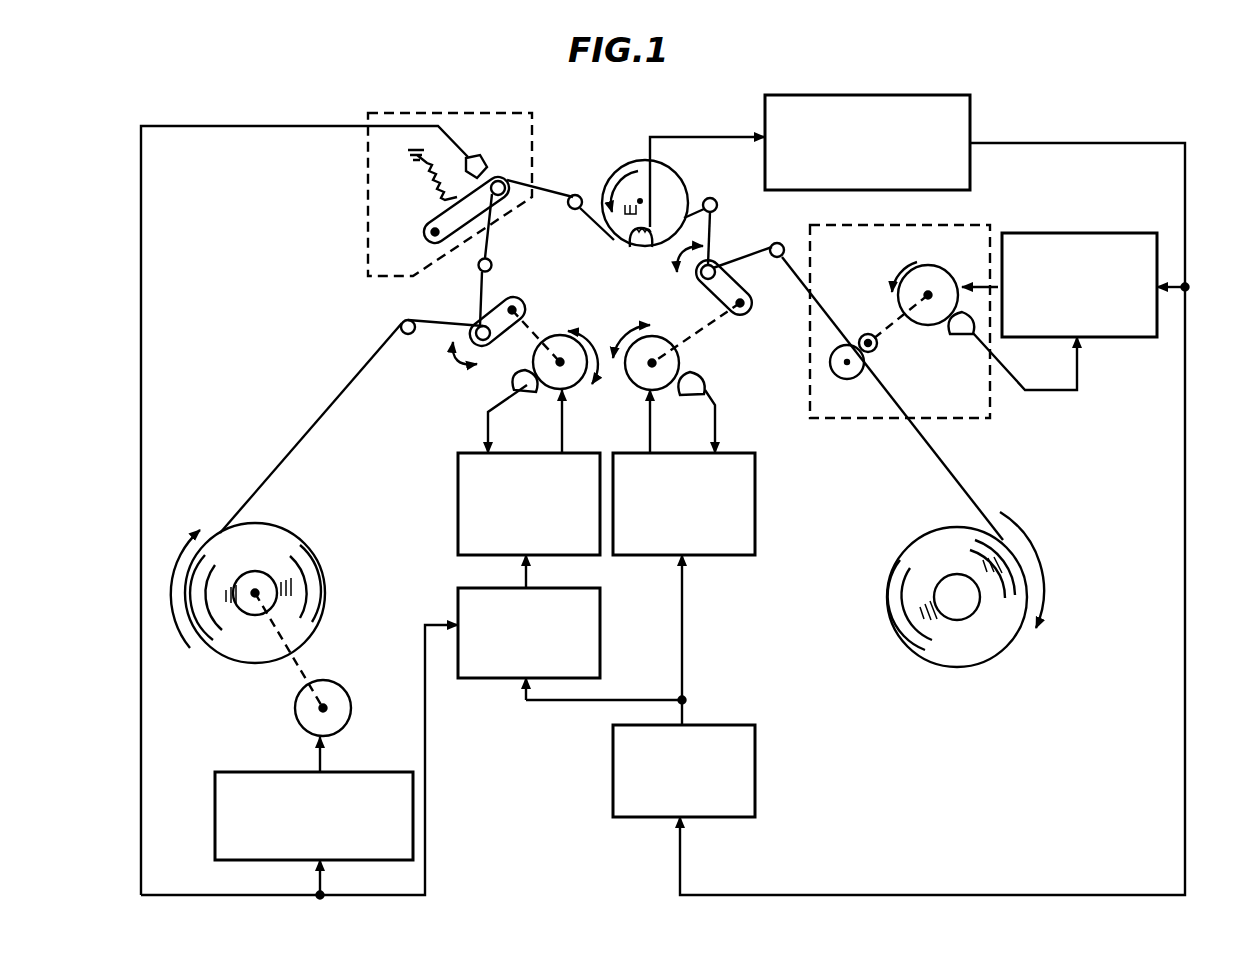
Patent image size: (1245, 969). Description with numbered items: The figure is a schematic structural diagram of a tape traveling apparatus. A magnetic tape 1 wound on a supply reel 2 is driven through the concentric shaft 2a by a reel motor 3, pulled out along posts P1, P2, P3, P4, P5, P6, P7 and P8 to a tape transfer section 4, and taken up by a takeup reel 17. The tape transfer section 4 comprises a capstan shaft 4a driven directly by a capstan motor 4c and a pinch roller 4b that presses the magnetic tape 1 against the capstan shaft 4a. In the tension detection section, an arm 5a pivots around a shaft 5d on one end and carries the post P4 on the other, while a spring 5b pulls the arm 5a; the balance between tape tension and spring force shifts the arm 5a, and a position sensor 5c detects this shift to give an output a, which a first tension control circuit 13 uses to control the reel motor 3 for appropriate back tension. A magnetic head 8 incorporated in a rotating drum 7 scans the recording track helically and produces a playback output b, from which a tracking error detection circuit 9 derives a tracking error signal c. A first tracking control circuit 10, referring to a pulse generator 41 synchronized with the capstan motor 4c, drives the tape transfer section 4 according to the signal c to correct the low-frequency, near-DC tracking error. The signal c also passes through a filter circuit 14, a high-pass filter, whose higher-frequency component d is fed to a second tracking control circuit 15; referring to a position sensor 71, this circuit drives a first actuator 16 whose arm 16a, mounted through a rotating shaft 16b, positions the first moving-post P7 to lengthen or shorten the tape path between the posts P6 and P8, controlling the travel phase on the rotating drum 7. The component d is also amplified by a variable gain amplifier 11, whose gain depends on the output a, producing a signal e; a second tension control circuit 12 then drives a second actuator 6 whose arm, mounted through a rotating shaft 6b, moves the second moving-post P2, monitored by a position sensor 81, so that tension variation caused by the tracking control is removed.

The magnetic tape 1 is at (297, 441).
The supply reel 2 is at (310, 545).
The concentric shaft 2a is at (298, 665).
The reel motor 3 is at (335, 683).
The tape transfer section 4 is at (905, 226).
The capstan shaft 4a is at (877, 349).
The pinch roller 4b is at (858, 376).
The capstan motor 4c is at (925, 266).
The pulse generator 41 is at (950, 336).
The arm 5a is at (447, 213).
The spring 5b is at (437, 184).
The position sensor 5c is at (477, 157).
The shaft 5d is at (432, 234).
The second actuator 6 is at (573, 389).
The rotating shaft 6b is at (537, 330).
The position sensor 81 is at (532, 393).
The rotating drum 7 is at (667, 168).
The magnetic head 8 is at (630, 250).
The tracking error detection circuit 9 is at (975, 112).
The first tracking control circuit 10 is at (1130, 233).
The variable gain amplifier 11 is at (600, 596).
The second tension control circuit 12 is at (458, 512).
The first tension control circuit 13 is at (215, 795).
The filter circuit 14 is at (756, 742).
The second tracking control circuit 15 is at (756, 470).
The first actuator 16 is at (637, 392).
The arm 16a is at (752, 311).
The rotating shaft 16b is at (700, 330).
The position sensor 71 is at (693, 382).
The takeup reel 17 is at (903, 648).
The post P1 is at (413, 335).
The second moving-post P2 is at (482, 325).
The post P3 is at (493, 266).
The post P4 is at (500, 196).
The post P5 is at (577, 210).
The post P6 is at (710, 198).
The first moving-post P7 is at (742, 254).
The post P8 is at (764, 262).
The output of position sensor a is at (285, 127).
The playback output b is at (690, 137).
The detected output c is at (1115, 143).
The high-frequency component d is at (686, 714).
The output signal e is at (528, 571).